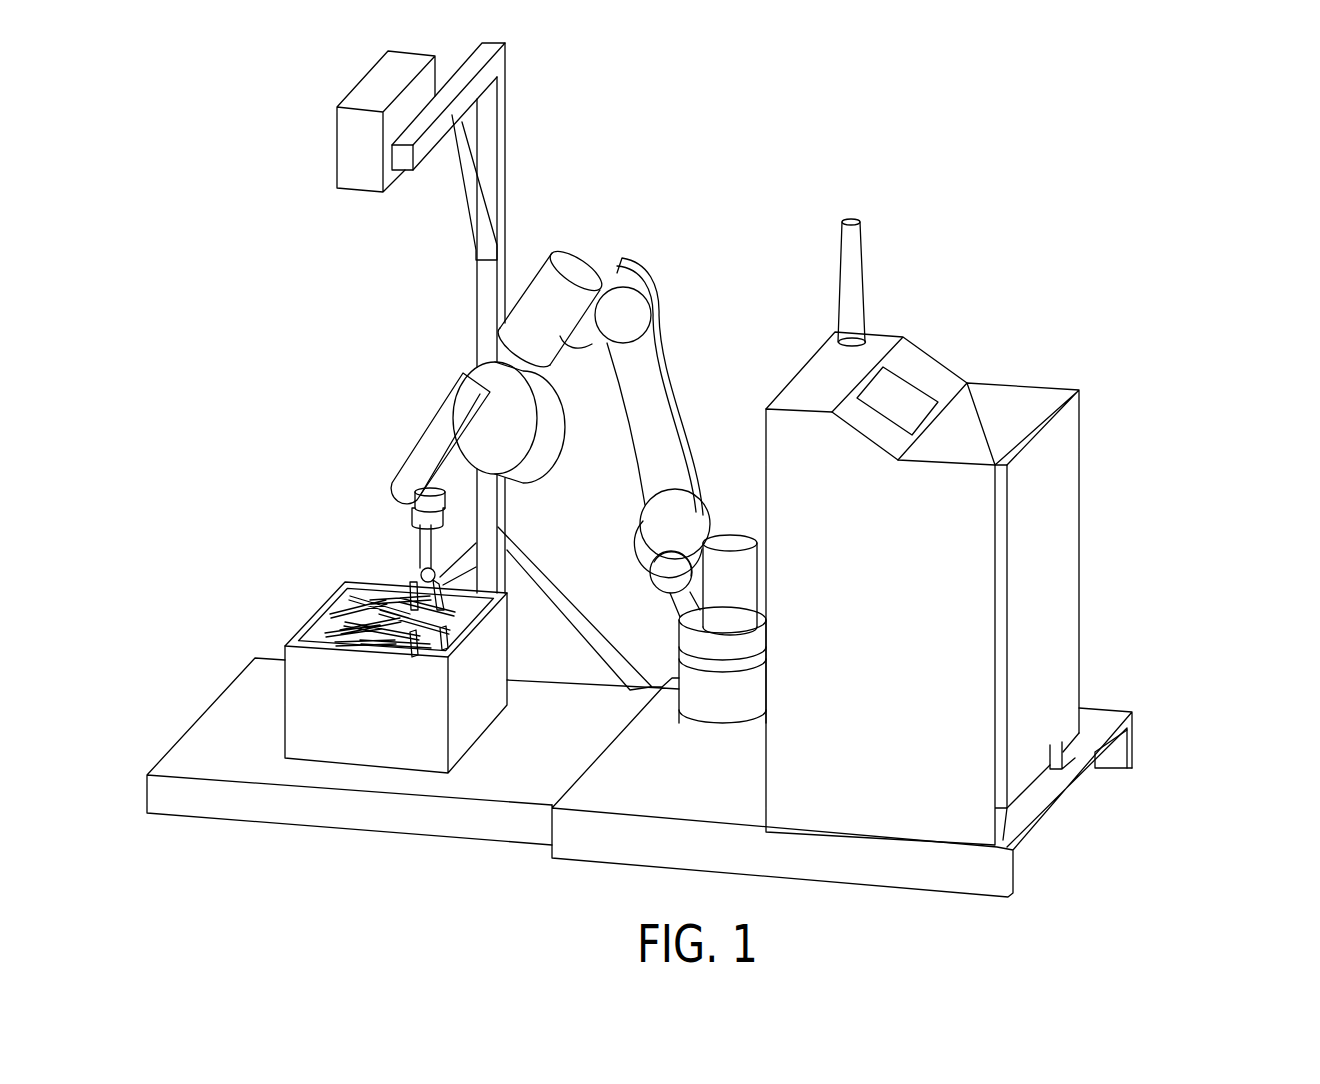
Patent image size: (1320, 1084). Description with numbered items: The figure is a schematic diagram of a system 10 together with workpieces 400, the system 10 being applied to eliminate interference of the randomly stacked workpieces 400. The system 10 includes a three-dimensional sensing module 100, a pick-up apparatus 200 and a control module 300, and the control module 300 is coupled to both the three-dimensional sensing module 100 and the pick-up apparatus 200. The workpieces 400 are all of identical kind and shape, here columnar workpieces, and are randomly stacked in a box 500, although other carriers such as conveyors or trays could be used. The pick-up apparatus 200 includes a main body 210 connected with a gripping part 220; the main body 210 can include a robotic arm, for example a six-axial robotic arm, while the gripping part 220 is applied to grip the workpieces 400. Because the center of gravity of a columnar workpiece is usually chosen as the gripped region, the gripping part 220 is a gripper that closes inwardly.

The system 10 is at (1170, 130).
The three-dimensional sensing module 100 is at (337, 147).
The pick-up apparatus 200 is at (282, 397).
The main body 210 is at (427, 444).
The gripping part 220 is at (413, 582).
The control module 300 is at (930, 370).
The workpieces 400 is at (338, 612).
The box 500 is at (286, 703).